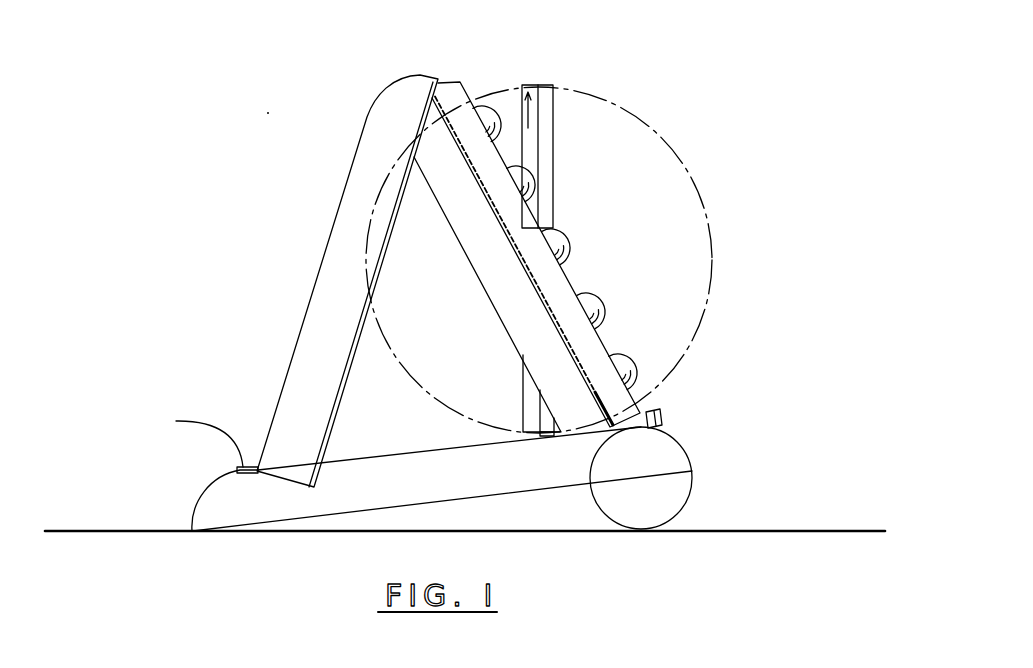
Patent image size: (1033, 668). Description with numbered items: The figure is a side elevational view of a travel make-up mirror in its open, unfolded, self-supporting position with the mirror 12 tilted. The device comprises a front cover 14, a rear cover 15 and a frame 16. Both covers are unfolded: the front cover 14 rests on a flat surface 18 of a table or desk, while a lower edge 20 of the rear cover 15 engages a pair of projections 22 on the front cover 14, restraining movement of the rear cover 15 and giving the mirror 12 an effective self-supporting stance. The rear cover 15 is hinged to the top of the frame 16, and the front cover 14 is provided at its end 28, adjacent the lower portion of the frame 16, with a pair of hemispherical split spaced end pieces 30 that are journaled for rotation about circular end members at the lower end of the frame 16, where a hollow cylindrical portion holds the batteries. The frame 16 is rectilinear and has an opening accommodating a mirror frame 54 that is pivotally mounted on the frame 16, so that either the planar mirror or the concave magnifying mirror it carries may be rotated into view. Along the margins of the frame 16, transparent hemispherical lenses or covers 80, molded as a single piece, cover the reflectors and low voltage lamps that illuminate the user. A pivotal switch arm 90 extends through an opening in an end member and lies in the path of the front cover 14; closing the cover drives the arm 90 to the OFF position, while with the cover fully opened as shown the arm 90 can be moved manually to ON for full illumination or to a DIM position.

The mirror 12 is at (740, 128).
The front cover 14 is at (458, 480).
The rear cover 15 is at (305, 368).
The frame 16 is at (597, 348).
The flat surface 18 is at (83, 528).
The lower edge 20 is at (286, 478).
The projections 22 is at (245, 466).
The end 28 is at (730, 466).
The hemispherical split spaced end pieces 30 is at (652, 509).
The mirror frame 54 is at (549, 97).
The transparent hemispherical lenses or covers 80 is at (576, 297).
The pivotal switch arm 90 is at (665, 422).